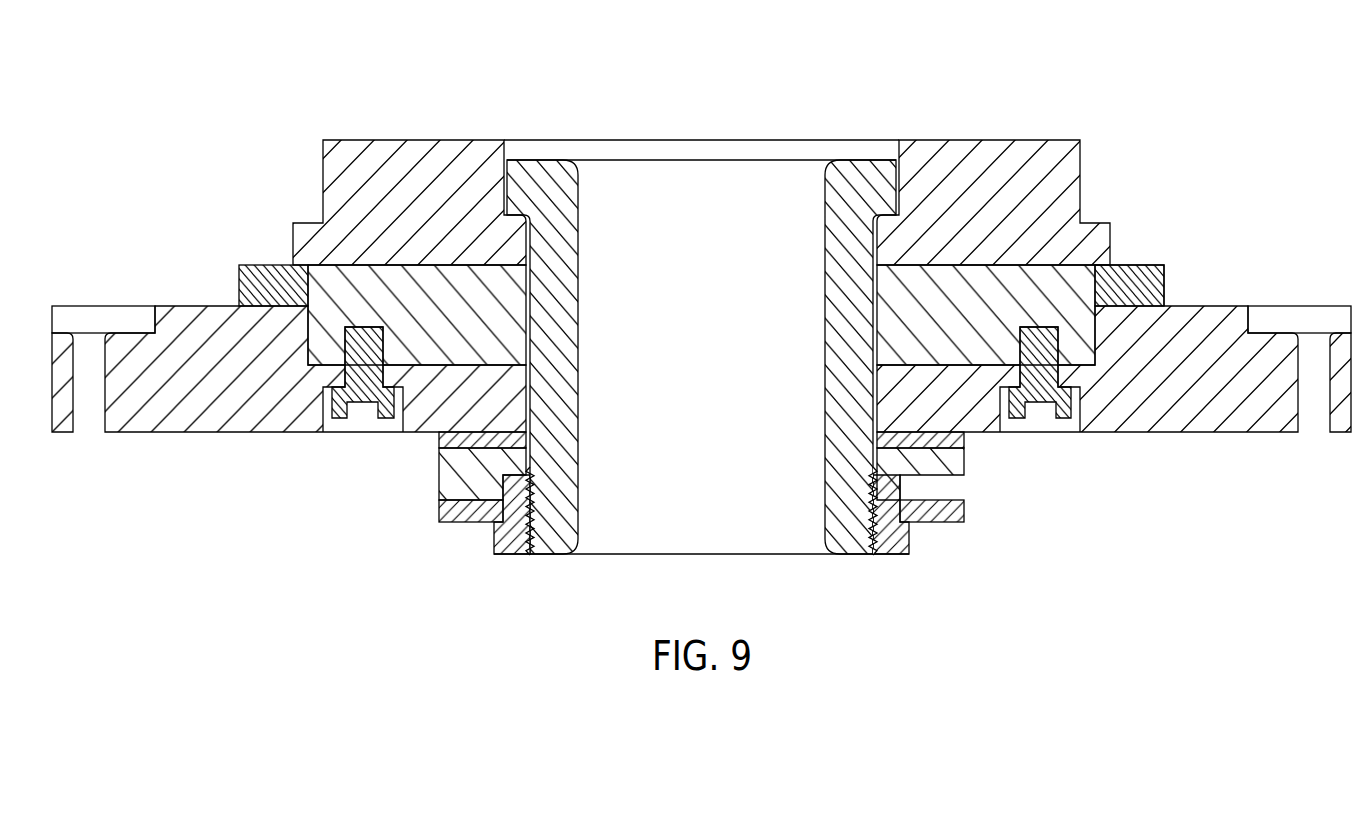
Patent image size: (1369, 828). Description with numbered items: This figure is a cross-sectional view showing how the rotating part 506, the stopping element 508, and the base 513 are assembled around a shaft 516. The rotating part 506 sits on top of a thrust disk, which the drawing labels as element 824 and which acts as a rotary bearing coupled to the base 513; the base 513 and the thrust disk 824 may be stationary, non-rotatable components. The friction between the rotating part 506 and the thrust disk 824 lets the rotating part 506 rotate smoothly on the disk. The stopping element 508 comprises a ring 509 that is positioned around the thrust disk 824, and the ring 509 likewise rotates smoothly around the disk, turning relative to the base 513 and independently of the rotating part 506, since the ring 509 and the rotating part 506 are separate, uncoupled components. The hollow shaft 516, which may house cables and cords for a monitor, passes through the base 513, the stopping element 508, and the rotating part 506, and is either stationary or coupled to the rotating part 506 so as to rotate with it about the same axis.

The shaft 516 is at (696, 190).
The rotating part 506 is at (992, 153).
The mounting block 824 is at (1065, 288).
The stopping element 508 is at (1160, 258).
The ring 509 is at (1165, 290).
The base 513 is at (1217, 407).